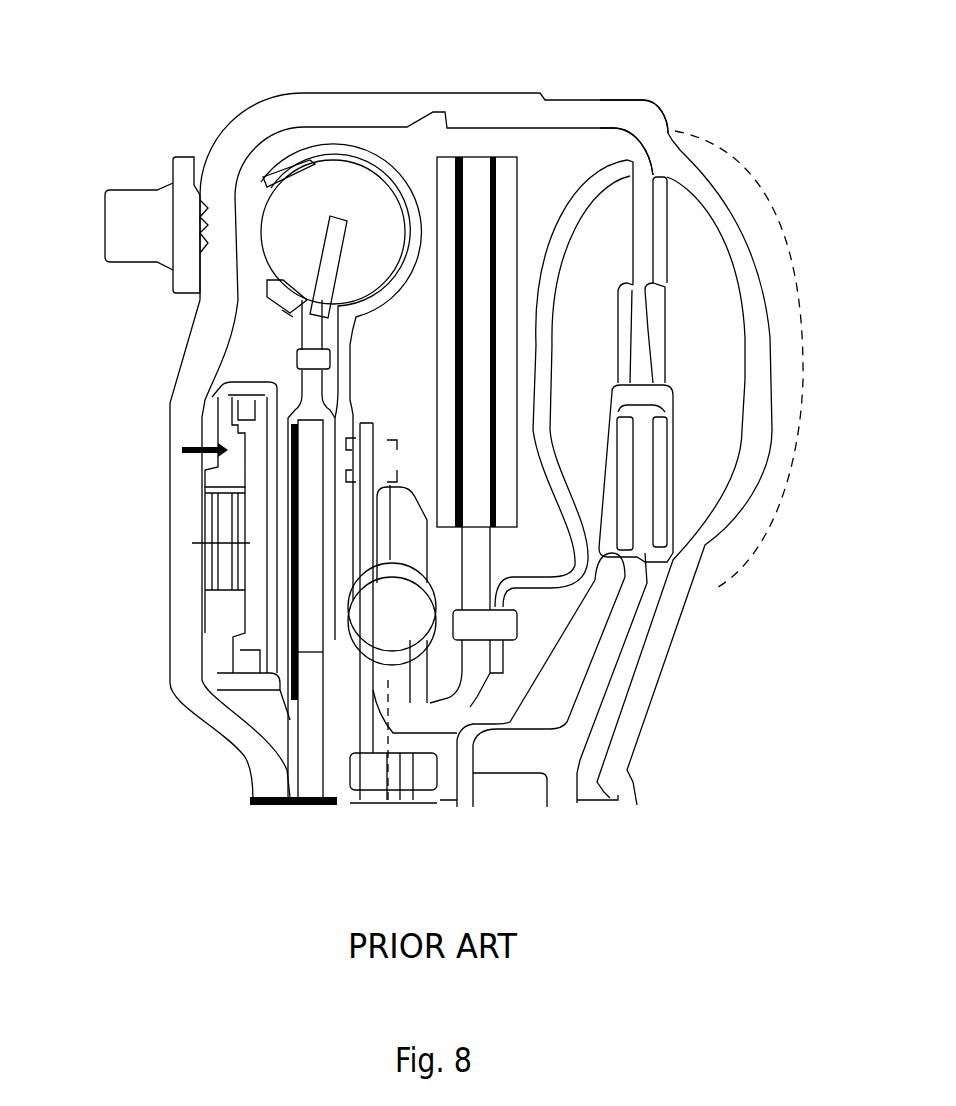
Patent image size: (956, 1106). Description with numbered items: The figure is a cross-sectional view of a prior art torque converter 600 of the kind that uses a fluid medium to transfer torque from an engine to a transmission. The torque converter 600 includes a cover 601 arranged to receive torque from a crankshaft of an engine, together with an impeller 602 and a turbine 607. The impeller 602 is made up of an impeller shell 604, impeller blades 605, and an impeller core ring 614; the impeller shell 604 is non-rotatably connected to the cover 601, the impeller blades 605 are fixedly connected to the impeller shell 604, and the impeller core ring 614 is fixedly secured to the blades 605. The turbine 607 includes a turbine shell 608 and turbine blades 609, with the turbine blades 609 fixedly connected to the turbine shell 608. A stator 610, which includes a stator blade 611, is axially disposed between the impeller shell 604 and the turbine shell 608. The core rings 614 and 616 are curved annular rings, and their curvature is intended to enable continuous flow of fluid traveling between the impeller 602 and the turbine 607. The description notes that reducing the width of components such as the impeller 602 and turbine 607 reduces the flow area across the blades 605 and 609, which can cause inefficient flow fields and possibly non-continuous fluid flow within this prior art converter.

The prior art torque converter 600 is at (99, 59).
The cover 601 is at (229, 127).
The impeller 602 is at (762, 115).
The impeller shell 604 is at (651, 102).
The impeller blades 605 is at (686, 204).
The turbine 607 is at (571, 147).
The turbine shell 608 is at (551, 211).
The turbine blades 609 is at (581, 420).
The stator 610 is at (680, 458).
The stator blade 611 is at (676, 500).
The impeller core ring 614 is at (670, 306).
The core ring 616 is at (608, 330).